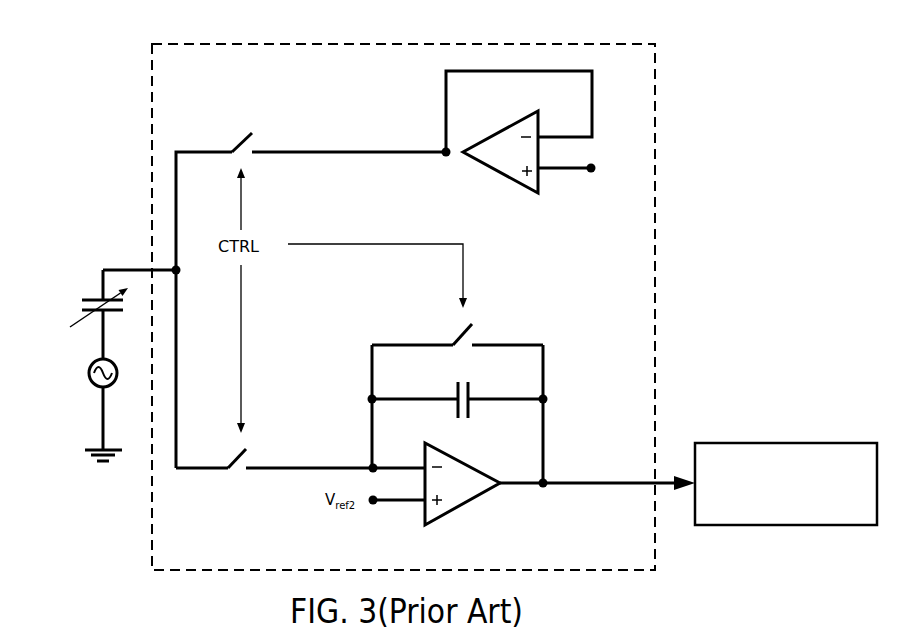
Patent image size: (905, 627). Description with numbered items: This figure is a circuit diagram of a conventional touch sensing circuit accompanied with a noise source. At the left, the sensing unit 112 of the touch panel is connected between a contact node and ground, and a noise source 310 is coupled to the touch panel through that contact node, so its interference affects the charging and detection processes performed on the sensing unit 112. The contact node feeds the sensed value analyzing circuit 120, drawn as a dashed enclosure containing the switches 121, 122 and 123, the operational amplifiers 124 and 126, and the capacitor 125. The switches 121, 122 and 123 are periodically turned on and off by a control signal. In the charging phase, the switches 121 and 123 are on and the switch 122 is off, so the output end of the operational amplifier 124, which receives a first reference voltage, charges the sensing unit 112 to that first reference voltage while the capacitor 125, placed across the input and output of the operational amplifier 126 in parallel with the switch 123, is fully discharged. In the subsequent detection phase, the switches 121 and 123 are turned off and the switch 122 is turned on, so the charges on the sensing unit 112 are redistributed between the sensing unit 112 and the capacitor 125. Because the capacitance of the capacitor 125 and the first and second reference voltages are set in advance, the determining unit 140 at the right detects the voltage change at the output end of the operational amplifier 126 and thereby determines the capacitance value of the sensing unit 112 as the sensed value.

The sensed value analyzing circuit 120 is at (152, 62).
The switch 121 is at (231, 129).
The switch 122 is at (225, 485).
The switch 123 is at (445, 324).
The operational amplifier 124 is at (510, 182).
The capacitor 125 is at (485, 378).
The operational amplifier 126 is at (470, 502).
The sensing unit 112 is at (66, 310).
The noise source 310 is at (72, 368).
The determining unit 140 is at (800, 443).